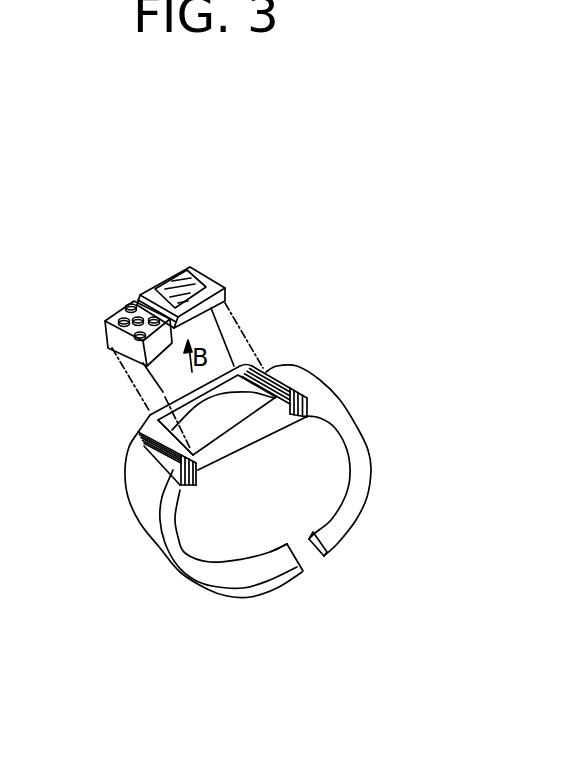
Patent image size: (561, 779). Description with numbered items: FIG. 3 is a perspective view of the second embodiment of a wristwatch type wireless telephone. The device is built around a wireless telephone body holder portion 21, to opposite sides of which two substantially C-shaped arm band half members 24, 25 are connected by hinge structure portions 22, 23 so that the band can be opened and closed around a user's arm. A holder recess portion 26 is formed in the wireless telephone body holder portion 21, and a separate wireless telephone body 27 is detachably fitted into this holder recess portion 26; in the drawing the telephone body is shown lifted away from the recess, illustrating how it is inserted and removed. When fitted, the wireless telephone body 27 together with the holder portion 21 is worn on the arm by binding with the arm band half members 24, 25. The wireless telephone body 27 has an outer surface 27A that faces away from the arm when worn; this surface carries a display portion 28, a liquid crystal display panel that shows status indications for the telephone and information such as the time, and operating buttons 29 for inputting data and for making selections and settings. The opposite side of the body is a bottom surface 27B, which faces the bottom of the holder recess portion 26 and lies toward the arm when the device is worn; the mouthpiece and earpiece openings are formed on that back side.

The wireless telephone body holder portion 21 is at (233, 449).
The hinge structure portion 22 is at (305, 418).
The hinge structure portion 23 is at (193, 480).
The arm band half member 24 is at (364, 440).
The arm band half member 25 is at (273, 578).
The holder recess portion 26 is at (148, 415).
The wireless telephone body 27 is at (196, 295).
The outer surface 27A is at (142, 292).
The bottom surface 27B is at (224, 307).
The display portion 28 is at (196, 268).
The operating buttons 29 is at (124, 300).